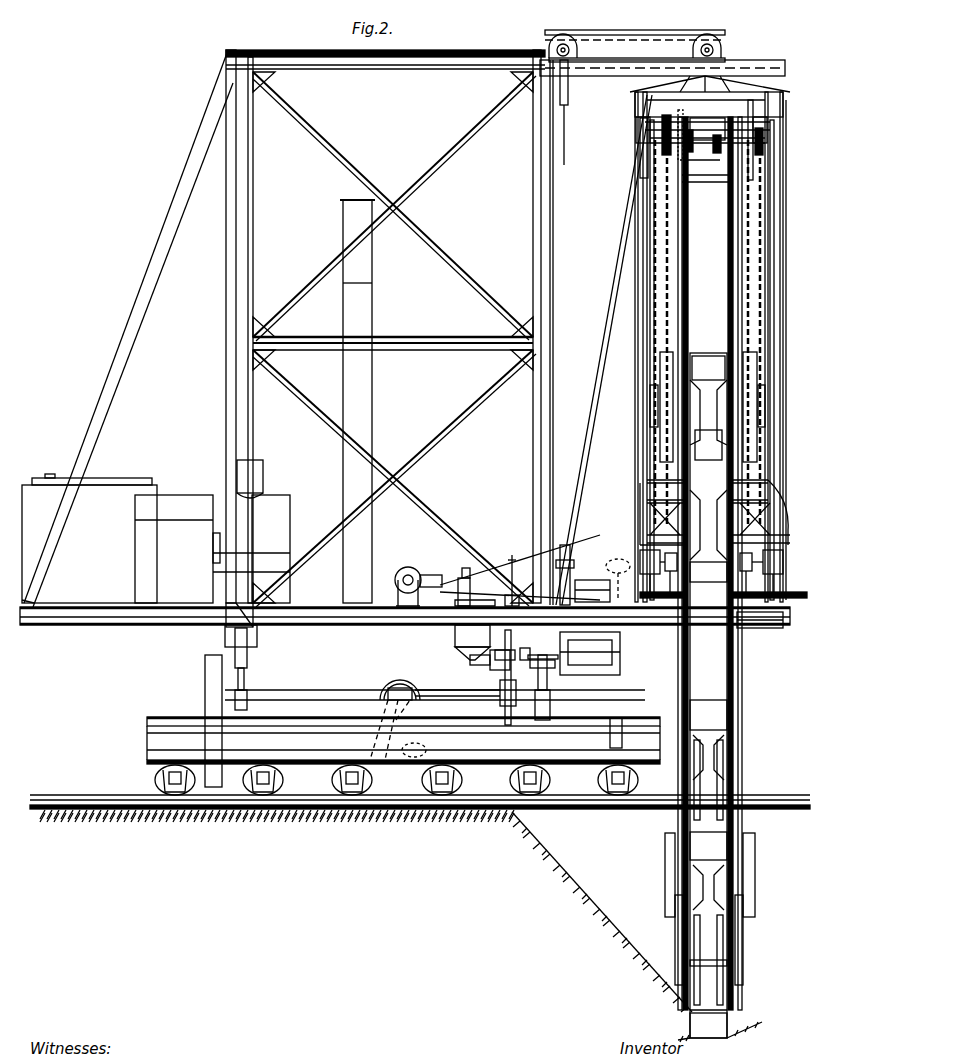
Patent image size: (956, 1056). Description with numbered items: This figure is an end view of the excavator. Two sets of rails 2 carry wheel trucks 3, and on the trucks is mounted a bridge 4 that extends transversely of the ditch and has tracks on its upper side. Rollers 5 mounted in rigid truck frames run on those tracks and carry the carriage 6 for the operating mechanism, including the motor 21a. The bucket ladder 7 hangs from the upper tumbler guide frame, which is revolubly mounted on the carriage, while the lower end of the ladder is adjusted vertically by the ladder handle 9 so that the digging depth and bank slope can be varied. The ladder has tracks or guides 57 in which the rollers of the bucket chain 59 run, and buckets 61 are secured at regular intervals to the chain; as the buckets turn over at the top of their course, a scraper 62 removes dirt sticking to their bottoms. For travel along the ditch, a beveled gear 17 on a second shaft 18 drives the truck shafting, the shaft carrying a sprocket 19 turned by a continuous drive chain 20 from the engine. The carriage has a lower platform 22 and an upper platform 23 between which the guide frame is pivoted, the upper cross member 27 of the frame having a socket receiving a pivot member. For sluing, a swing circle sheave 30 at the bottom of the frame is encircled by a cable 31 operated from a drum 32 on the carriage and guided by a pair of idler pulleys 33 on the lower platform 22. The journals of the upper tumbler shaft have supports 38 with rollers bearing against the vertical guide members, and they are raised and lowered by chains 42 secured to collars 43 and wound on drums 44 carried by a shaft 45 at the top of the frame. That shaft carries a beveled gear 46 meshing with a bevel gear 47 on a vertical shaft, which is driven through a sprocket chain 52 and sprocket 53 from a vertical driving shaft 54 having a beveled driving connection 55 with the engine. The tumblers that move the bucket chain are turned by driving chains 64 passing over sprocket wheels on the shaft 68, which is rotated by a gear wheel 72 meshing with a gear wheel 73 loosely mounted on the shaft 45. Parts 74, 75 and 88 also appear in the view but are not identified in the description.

The rails 2 is at (96, 797).
The wheel trucks 3 is at (500, 754).
The bridge 4 is at (310, 700).
The rollers 5 is at (246, 664).
The carriage 6 is at (385, 338).
The bucket ladder 7 is at (736, 700).
The ladder handle 9 is at (755, 885).
The beveled gear 17 is at (408, 688).
The second shaft 18 is at (428, 690).
The sprocket 19 is at (508, 688).
The continuous drive chain 20 is at (414, 751).
The motor 21a is at (466, 576).
The lower platform 22 is at (770, 630).
The upper platform 23 is at (745, 66).
The upper cross member 27 is at (512, 557).
The swing circle sheave 30 is at (780, 592).
The cable 31 is at (566, 545).
The drum 32 is at (408, 567).
The idler pulleys 33 is at (592, 582).
The supports 38 is at (658, 398).
The chains 42 is at (655, 258).
The collars 43 is at (652, 410).
The drums 44 is at (645, 150).
The shaft 45 is at (770, 160).
The beveled gear 46 is at (717, 152).
The bevel gear 47 is at (725, 128).
The sprocket chain 52 is at (650, 30).
The sprocket 53 is at (566, 40).
The vertical driving shaft 54 is at (566, 445).
The beveled driving connection 55 is at (572, 565).
The tracks or guides 57 is at (700, 810).
The bucket chain 59 is at (715, 958).
The buckets 61 is at (700, 353).
The scraper 62 is at (705, 362).
The driving chains 64 is at (665, 220).
The shaft 68 is at (708, 125).
The gear wheel 72 is at (650, 105).
The gear wheel 73 is at (668, 158).
The gear 74 is at (692, 160).
The ratchet 75 is at (680, 120).
The rope 88 is at (618, 578).